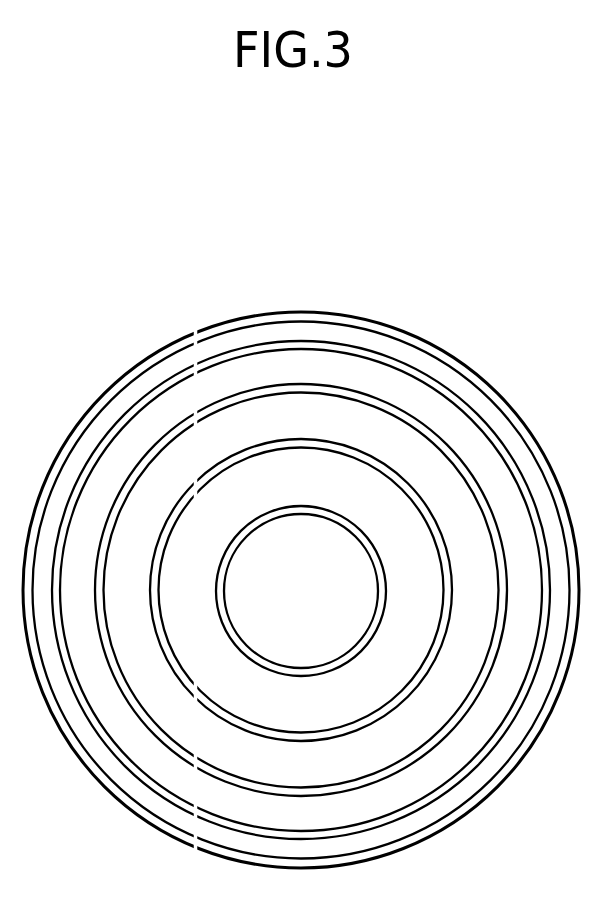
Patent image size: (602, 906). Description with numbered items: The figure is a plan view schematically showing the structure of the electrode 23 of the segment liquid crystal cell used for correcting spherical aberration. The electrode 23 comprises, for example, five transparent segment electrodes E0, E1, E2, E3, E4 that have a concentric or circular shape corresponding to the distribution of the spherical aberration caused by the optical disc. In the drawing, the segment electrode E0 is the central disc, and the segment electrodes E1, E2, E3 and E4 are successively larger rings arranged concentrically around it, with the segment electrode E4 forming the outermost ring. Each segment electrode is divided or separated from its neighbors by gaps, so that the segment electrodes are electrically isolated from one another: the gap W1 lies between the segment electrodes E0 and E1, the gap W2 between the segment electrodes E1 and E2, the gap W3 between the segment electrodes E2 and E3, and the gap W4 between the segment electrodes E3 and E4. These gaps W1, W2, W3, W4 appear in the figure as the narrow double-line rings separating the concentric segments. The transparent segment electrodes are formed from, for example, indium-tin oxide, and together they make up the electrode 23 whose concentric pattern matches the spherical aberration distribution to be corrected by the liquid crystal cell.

The electrode 23 is at (317, 248).
The segment electrode E0 is at (301, 591).
The segment electrode E1 is at (301, 590).
The segment electrode E2 is at (301, 590).
The segment electrode E3 is at (301, 590).
The segment electrode E4 is at (218, 340).
The gap W1 is at (245, 647).
The gap W2 is at (220, 720).
The gap W3 is at (202, 773).
The gap W4 is at (232, 828).